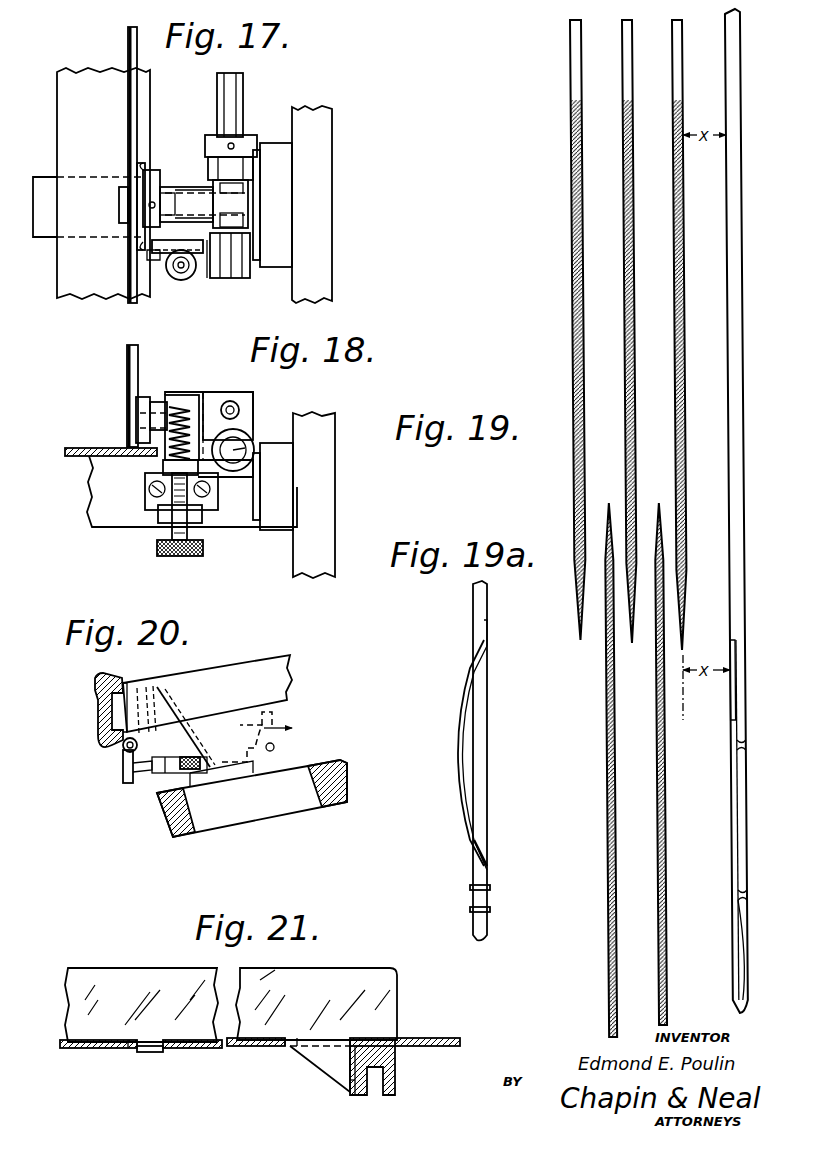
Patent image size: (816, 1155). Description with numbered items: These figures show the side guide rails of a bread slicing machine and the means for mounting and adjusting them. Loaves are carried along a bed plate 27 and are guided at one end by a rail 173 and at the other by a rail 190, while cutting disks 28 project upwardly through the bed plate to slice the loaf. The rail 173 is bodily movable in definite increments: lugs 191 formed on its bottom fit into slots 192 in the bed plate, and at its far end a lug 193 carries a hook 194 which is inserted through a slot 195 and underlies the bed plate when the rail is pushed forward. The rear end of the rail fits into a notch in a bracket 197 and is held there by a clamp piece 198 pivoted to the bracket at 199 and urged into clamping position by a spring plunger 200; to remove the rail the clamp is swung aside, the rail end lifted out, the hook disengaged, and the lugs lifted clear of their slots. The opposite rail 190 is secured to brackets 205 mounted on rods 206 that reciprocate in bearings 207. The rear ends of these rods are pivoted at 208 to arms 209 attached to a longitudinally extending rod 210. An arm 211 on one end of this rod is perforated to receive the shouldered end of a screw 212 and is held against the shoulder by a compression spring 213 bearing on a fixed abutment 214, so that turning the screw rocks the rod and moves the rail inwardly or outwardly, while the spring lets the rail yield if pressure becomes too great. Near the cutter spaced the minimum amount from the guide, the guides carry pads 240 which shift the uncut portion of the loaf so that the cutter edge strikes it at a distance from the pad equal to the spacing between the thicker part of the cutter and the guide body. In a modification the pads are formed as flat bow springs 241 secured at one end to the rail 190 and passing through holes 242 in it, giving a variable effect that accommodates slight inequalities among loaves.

In FIG. 17, the bed plate 27 is at (68, 293).
In FIG. 18, the bed plate 27 is at (68, 452).
In FIG. 21, the bed plate 27 is at (256, 1048).
In FIG. 19, the cutting disks 28 is at (679, 272).
In FIG. 20, the rail 173 is at (243, 670).
In FIG. 21, the rail 173 is at (151, 979).
In FIG. 17, the rail 190 is at (135, 88).
In FIG. 18, the rail 190 is at (145, 339).
In FIG. 19, the rail 190 is at (740, 359).
In FIG. 19A, the rail 190 is at (488, 727).
In FIG. 21, the lugs 191 is at (149, 1053).
In FIG. 21, the slots 192 is at (134, 1050).
In FIG. 21, the lug 193 is at (337, 1084).
In FIG. 21, the hook 194 is at (353, 1042).
In FIG. 21, the slot 195 is at (291, 1050).
In FIG. 20, the bracket 197 is at (183, 746).
In FIG. 20, the clamp piece 198 is at (96, 688).
In FIG. 20, the pivot 199 is at (124, 750).
In FIG. 20, the spring plunger 200 is at (137, 784).
In FIG. 17, the brackets 205 is at (138, 185).
In FIG. 18, the brackets 205 is at (148, 396).
In FIG. 17, the rods 206 is at (155, 186).
In FIG. 18, the rods 206 is at (210, 400).
In FIG. 17, the bearings 207 is at (236, 206).
In FIG. 18, the bearings 207 is at (196, 392).
In FIG. 18, the pivot 208 is at (240, 404).
In FIG. 17, the arms 209 is at (240, 168).
In FIG. 18, the arms 209 is at (247, 437).
In FIG. 17, the rod 210 is at (240, 85).
In FIG. 18, the rod 210 is at (262, 450).
In FIG. 17, the arm 211 is at (190, 278).
In FIG. 18, the arm 211 is at (205, 500).
In FIG. 18, the screw 212 is at (168, 545).
In FIG. 18, the compression spring 213 is at (163, 463).
In FIG. 17, the fixed abutment 214 is at (150, 245).
In FIG. 18, the fixed abutment 214 is at (176, 396).
In FIG. 17, the pads 240 is at (137, 215).
In FIG. 19, the pads 240 is at (735, 773).
In FIG. 19A, the pads 240 is at (456, 760).
In FIG. 19A, the flat bow springs 241 is at (492, 913).
In FIG. 19A, the holes 242 is at (479, 843).